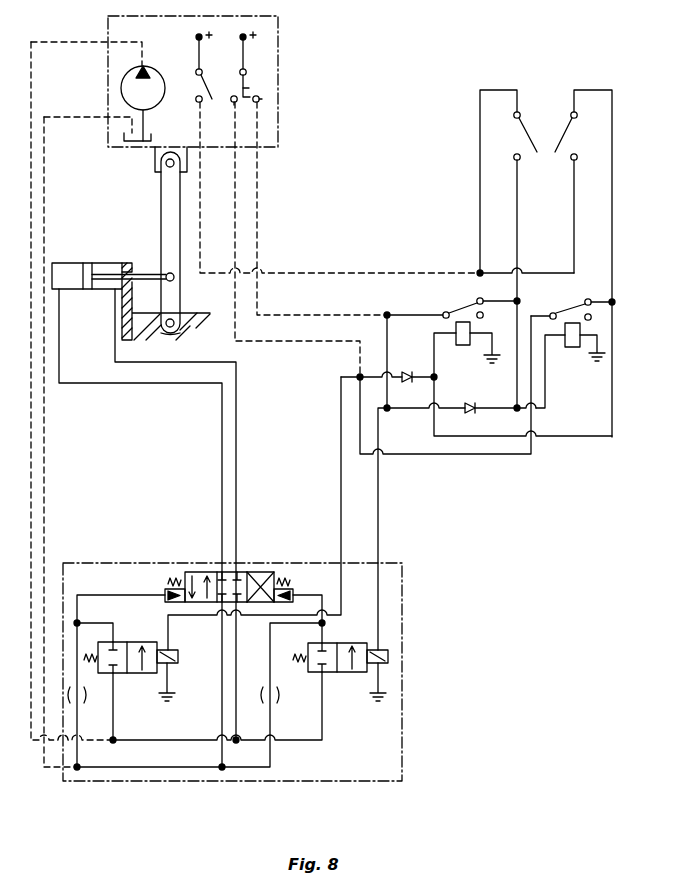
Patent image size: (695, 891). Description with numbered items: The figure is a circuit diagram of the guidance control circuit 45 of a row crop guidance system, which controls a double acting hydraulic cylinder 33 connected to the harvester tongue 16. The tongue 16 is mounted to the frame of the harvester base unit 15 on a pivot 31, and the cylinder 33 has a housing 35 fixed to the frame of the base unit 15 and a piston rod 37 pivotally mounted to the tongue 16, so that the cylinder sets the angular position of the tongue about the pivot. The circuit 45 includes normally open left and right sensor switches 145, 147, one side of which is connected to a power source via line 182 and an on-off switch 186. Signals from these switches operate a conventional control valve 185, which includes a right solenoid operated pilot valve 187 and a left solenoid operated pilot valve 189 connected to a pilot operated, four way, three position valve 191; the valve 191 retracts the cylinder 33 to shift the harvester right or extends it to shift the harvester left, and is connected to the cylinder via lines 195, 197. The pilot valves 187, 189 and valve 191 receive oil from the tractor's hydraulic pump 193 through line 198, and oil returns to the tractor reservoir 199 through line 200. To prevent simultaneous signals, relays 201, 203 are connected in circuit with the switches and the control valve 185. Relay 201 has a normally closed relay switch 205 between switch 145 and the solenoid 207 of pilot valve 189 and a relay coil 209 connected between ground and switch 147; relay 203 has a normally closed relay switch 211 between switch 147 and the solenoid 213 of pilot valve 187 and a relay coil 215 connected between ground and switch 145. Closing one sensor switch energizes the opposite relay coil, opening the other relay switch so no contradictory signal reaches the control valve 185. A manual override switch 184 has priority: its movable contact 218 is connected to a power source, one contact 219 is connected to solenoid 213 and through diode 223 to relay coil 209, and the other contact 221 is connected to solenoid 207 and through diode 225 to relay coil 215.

The base unit 15 is at (181, 314).
The tongue 16 is at (163, 190).
The pivot 31 is at (168, 330).
The double acting hydraulic cylinder 33 is at (87, 262).
The housing 35 is at (100, 262).
The piston rod 37 is at (144, 273).
The guidance control circuit 45 is at (509, 566).
The left sensor switch 145 is at (517, 141).
The right sensor switch 147 is at (572, 141).
The line 182 is at (207, 208).
The manual override switch 184 is at (256, 79).
The control valve 185 is at (403, 611).
The on-off switch 186 is at (212, 84).
The right pilot valve 187 is at (134, 642).
The left pilot valve 189 is at (347, 673).
The pilot operated, four way, three position valve 191 is at (253, 571).
The hydraulic pump 193 is at (160, 75).
The line 195 is at (60, 332).
The line 197 is at (115, 356).
The line 198 is at (32, 421).
The reservoir 199 is at (151, 138).
The line 200 is at (45, 458).
The relay 201 is at (455, 307).
The relay 203 is at (572, 308).
The normally closed relay switch 205 is at (462, 307).
The solenoid 207 is at (390, 658).
The relay coil 209 is at (463, 345).
The normally closed relay switch 211 is at (592, 318).
The solenoid 213 is at (178, 656).
The relay coil 215 is at (572, 347).
The movable contact 218 is at (250, 88).
The contact 219 is at (236, 103).
The contact 221 is at (260, 99).
The diode 223 is at (409, 371).
The diode 225 is at (472, 414).